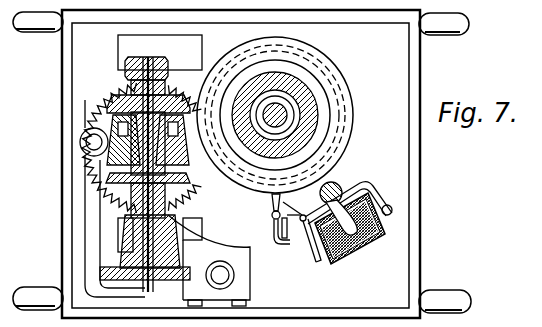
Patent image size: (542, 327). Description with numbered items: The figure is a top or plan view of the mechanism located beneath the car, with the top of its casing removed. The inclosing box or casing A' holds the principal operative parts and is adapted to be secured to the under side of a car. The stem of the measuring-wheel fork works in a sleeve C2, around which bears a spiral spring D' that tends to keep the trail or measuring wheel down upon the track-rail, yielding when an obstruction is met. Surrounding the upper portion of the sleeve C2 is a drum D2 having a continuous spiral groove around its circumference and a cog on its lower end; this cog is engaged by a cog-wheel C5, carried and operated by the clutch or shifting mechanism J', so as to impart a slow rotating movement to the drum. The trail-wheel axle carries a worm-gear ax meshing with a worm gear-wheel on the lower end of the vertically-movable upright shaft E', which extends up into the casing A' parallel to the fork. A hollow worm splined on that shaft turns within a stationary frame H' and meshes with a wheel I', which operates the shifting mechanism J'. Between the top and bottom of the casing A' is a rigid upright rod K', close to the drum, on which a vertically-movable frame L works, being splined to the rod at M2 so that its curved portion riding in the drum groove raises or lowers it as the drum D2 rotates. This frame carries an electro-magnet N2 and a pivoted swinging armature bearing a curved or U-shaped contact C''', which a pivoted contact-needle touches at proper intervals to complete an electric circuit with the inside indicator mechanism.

The inclosing box or casing A' is at (242, 164).
The sleeve C2 is at (337, 112).
The drum D2 is at (293, 115).
The spiral spring D' is at (279, 108).
The clutch or shifting mechanism J' is at (142, 151).
The cog-wheel C5 is at (182, 174).
The wheel I' is at (135, 200).
The stationary frame H' is at (209, 257).
The vertically-movable upright shaft E' is at (231, 283).
The worm-gear ax is at (271, 215).
The curved or U-shaped contact C''' is at (286, 237).
The vertically-movable frame L is at (302, 227).
The stationary upright rod K' is at (348, 190).
The electro-magnet N2 is at (349, 254).
The spline M2 is at (372, 189).